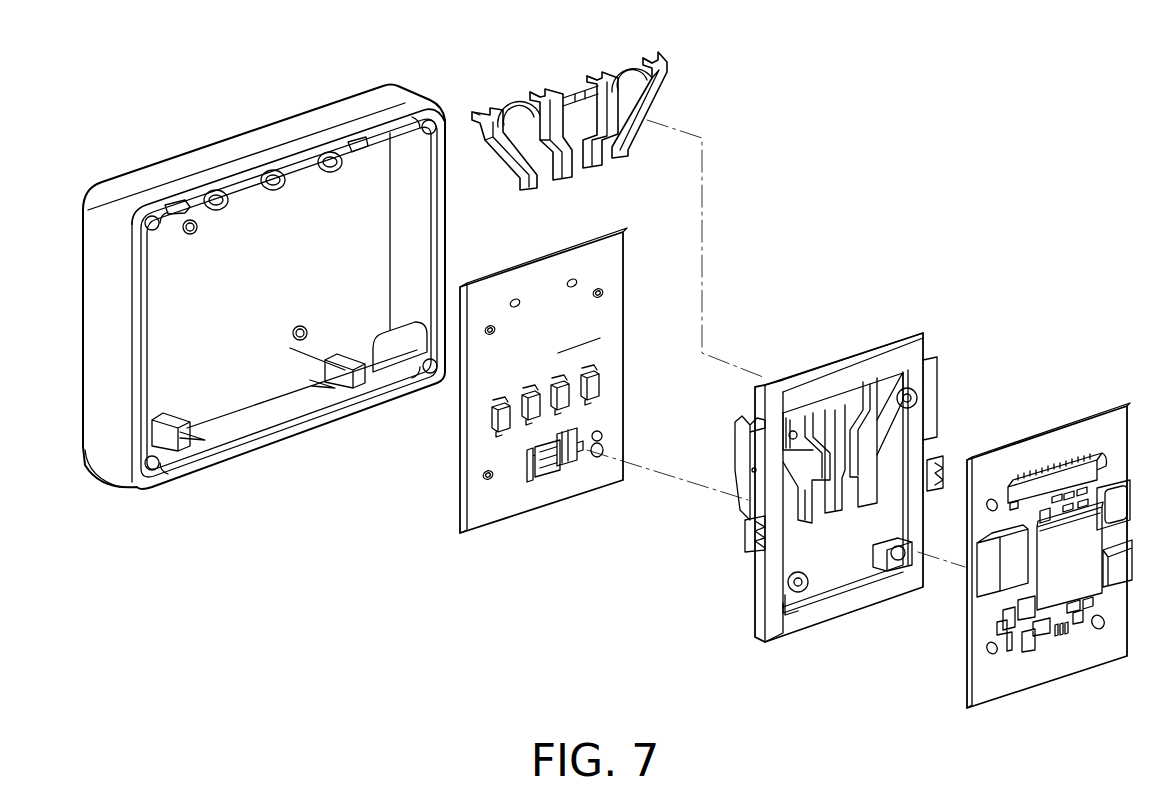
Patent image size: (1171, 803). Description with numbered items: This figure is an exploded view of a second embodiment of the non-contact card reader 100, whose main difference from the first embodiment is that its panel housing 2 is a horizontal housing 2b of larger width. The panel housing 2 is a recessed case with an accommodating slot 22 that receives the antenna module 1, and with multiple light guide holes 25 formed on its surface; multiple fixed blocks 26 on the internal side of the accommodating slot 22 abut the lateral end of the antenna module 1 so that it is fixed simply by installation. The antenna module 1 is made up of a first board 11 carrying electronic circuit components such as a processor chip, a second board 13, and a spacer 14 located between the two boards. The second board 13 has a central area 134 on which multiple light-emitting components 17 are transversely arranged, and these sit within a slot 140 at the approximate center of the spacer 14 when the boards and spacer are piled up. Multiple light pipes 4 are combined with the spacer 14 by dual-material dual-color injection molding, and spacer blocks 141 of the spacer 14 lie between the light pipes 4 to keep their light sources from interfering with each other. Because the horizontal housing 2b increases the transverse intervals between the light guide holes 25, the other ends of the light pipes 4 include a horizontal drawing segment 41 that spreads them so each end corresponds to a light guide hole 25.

The non-contact card reader 100 is at (1128, 72).
The antenna module 1 is at (1107, 348).
The panel housing 2 is at (75, 224).
The horizontal housing 2b is at (114, 458).
The light pipes 4 is at (528, 178).
The first board 11 is at (1092, 427).
The second board 13 is at (562, 484).
The spacer 14 is at (918, 355).
The light-emitting components 17 is at (568, 410).
The accommodating slot 22 is at (246, 382).
The light guide holes 25 is at (218, 190).
The fixed blocks 26 is at (187, 444).
The horizontal drawing segment 41 is at (508, 168).
The central area 134 is at (558, 353).
The slot 140 is at (836, 557).
The spacer blocks 141 is at (803, 455).